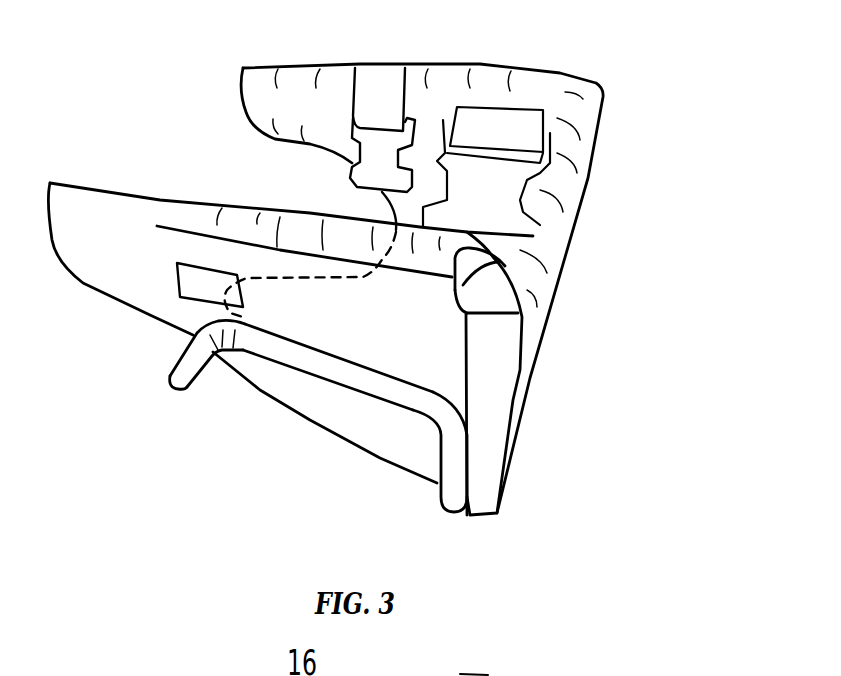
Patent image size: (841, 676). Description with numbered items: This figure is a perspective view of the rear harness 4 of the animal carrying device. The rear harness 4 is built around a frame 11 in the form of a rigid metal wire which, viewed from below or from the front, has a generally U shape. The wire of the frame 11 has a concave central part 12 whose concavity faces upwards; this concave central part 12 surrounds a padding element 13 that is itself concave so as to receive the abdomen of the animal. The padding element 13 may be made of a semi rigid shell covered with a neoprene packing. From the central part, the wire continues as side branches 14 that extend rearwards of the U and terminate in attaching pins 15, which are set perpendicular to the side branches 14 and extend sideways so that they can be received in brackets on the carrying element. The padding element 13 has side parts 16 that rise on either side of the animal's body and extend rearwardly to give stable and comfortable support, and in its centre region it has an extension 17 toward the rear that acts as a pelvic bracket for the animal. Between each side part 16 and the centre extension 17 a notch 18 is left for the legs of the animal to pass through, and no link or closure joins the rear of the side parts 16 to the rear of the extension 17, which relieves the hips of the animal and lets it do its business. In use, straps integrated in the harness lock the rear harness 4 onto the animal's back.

The rear harness 4 is at (680, 180).
The frame 11 is at (390, 507).
The concave central part 12 is at (443, 517).
The padding element 13 is at (413, 345).
The side branches 14 is at (330, 373).
The attaching pins 15 is at (162, 365).
The side parts 16 is at (258, 228).
The extension 17 is at (260, 297).
The notches 18 is at (318, 177).